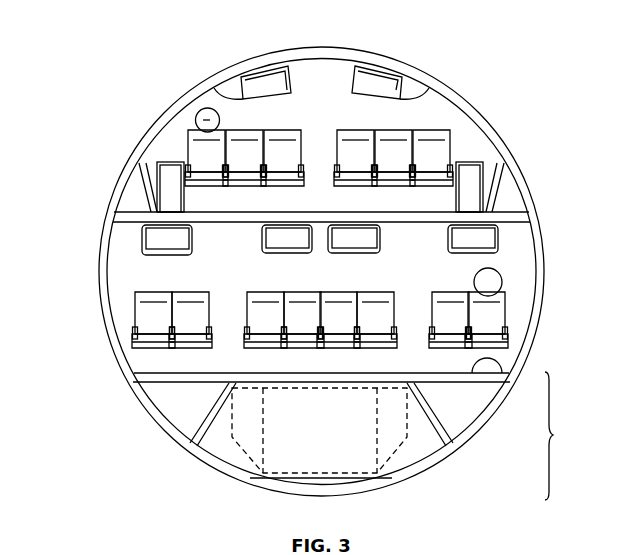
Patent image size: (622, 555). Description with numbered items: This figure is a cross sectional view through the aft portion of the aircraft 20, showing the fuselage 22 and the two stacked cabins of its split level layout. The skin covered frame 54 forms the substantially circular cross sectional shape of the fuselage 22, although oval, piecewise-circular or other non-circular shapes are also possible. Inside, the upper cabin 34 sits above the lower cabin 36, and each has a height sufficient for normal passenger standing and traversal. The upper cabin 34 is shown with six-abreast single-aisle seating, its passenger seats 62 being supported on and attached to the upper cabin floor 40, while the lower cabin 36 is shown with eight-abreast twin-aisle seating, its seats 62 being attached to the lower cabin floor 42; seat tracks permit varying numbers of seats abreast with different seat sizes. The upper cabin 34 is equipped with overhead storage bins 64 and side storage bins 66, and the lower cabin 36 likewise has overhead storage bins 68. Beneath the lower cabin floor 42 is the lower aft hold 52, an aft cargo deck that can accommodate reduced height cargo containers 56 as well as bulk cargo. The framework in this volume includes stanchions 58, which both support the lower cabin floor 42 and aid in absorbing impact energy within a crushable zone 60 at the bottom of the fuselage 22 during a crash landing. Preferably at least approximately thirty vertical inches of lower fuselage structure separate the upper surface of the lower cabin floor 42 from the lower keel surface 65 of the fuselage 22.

The aircraft 20 is at (82, 549).
The fuselage 22 is at (546, 176).
The upper cabin 34 is at (181, 126).
The lower cabin 36 is at (109, 296).
The upper cabin floor 40 is at (134, 217).
The lower cabin floor 42 is at (168, 380).
The lower aft hold 52 is at (420, 443).
The skin covered frame 54 is at (153, 133).
The cargo containers 56 is at (288, 437).
The stanchions 58 is at (202, 418).
The crushable zone 60 is at (564, 436).
The passenger seats 62 is at (432, 152).
The overhead storage bins 64 is at (266, 83).
The lower keel surface 65 is at (341, 486).
The side storage bins 66 is at (467, 175).
The overhead storage bins 68 is at (283, 240).